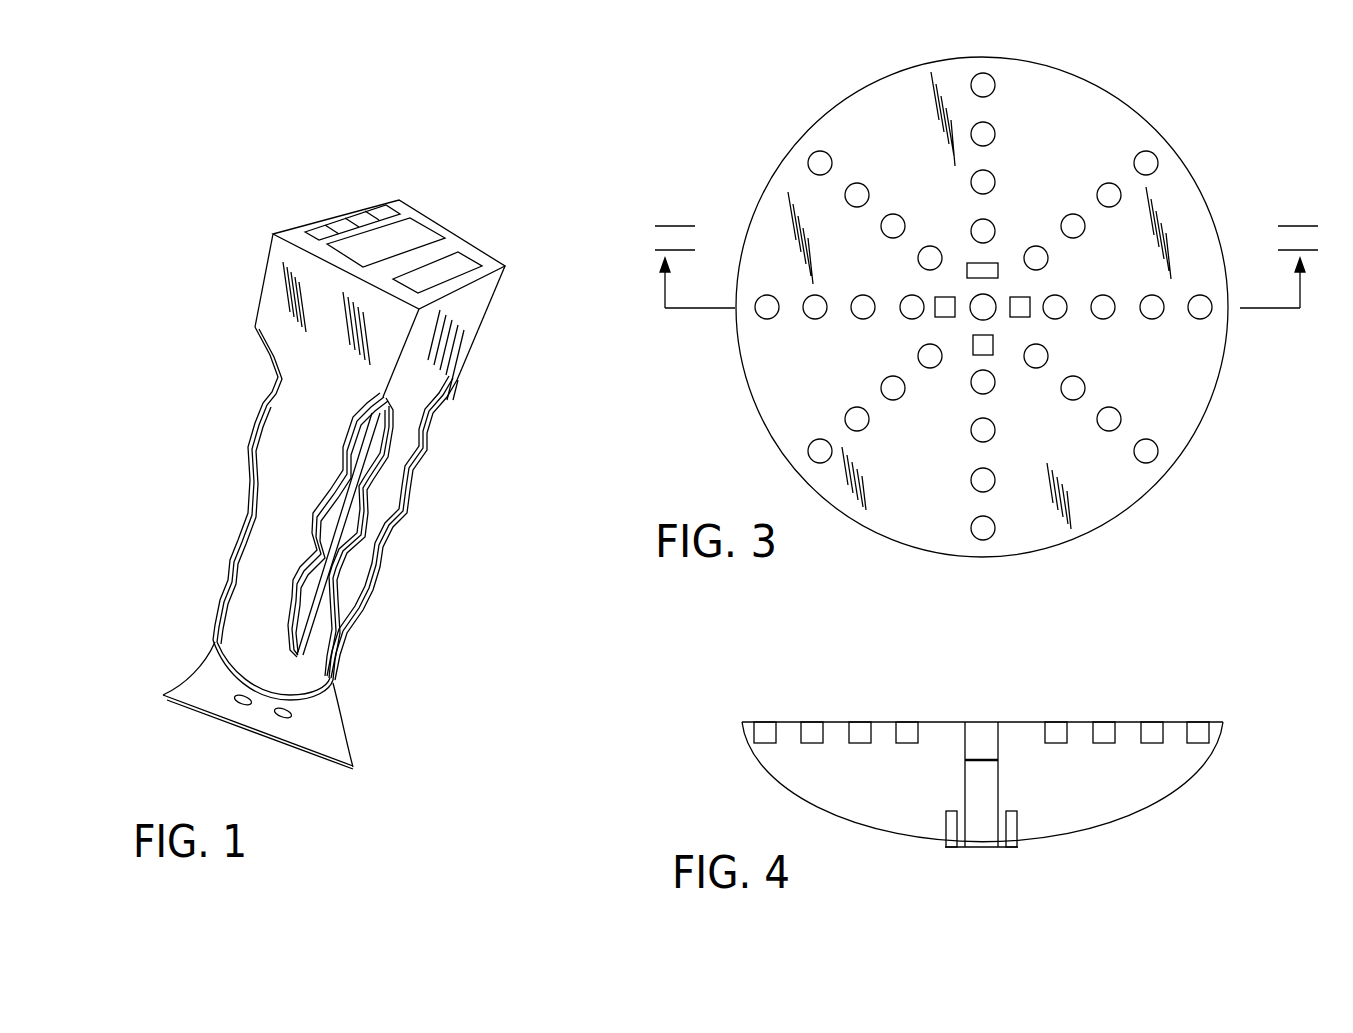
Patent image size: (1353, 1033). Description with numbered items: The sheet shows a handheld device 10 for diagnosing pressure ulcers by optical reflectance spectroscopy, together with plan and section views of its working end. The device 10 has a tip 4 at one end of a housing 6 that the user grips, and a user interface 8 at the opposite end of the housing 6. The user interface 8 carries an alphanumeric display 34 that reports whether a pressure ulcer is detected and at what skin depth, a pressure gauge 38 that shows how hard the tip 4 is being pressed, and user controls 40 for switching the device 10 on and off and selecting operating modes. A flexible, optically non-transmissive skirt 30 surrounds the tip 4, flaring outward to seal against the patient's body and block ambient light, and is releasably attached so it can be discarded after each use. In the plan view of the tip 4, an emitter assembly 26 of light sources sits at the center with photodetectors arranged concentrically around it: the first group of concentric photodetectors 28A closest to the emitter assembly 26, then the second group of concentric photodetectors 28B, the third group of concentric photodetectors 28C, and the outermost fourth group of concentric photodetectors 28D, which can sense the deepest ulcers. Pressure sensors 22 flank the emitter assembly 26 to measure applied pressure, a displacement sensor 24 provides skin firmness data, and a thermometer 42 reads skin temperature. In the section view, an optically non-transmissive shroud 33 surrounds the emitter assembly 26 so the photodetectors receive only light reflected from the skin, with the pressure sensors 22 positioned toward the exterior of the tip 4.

In FIG. 1, the tip 4 is at (200, 707).
In FIG. 3, the tip 4 is at (1208, 202).
In FIG. 4, the tip 4 is at (1150, 812).
In FIG. 1, the housing 6 is at (260, 473).
In FIG. 1, the user interface 8 is at (365, 190).
In FIG. 1, the handheld device 10 is at (473, 457).
In FIG. 1, the pressure sensors 22 is at (283, 713).
In FIG. 3, the pressure sensors 22 is at (940, 297).
In FIG. 4, the pressure sensors 22 is at (943, 838).
In FIG. 3, the displacement sensor 24 is at (994, 354).
In FIG. 3, the emitter assembly 26 is at (973, 320).
In FIG. 4, the emitter assembly 26 is at (982, 730).
In FIG. 3, the first group of concentric photodetectors 28A is at (995, 230).
In FIG. 4, the first group of concentric photodetectors 28A is at (907, 721).
In FIG. 3, the second group of concentric photodetectors 28B is at (995, 180).
In FIG. 4, the second group of concentric photodetectors 28B is at (865, 721).
In FIG. 3, the third group of concentric photodetectors 28C is at (995, 132).
In FIG. 4, the third group of concentric photodetectors 28C is at (810, 721).
In FIG. 3, the fourth group of concentric photodetectors 28D is at (995, 83).
In FIG. 4, the fourth group of concentric photodetectors 28D is at (767, 721).
In FIG. 1, the skirt 30 is at (337, 727).
In FIG. 4, the optically non-transmissive shroud 33 is at (1000, 785).
In FIG. 1, the alphanumeric display 34 is at (410, 228).
In FIG. 1, the pressure gauge 38 is at (457, 262).
In FIG. 1, the user controls 40 is at (317, 228).
In FIG. 3, the thermometer 42 is at (966, 264).